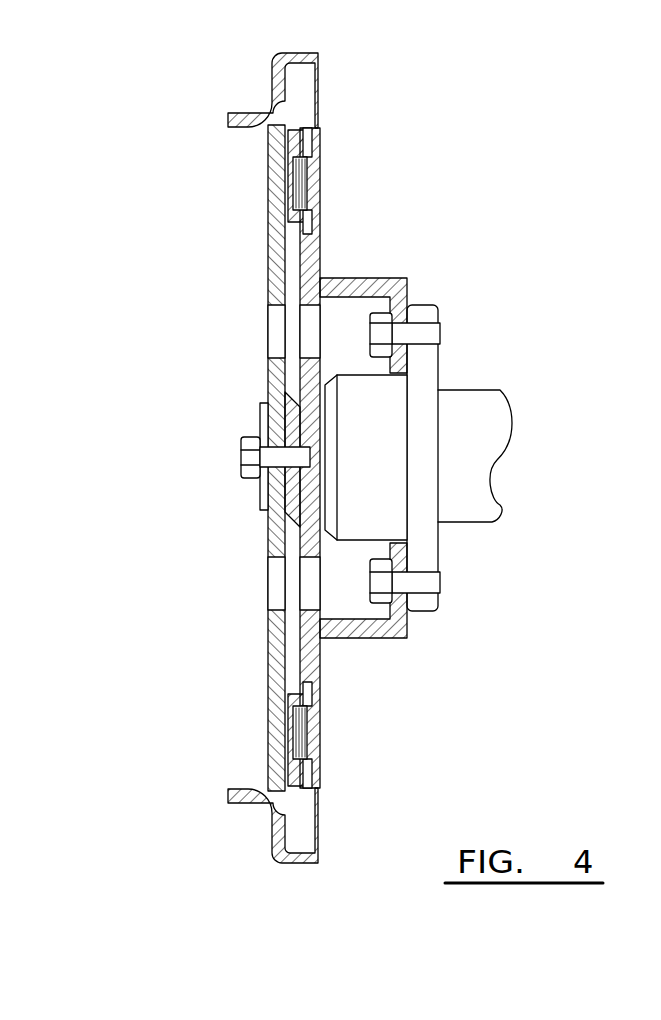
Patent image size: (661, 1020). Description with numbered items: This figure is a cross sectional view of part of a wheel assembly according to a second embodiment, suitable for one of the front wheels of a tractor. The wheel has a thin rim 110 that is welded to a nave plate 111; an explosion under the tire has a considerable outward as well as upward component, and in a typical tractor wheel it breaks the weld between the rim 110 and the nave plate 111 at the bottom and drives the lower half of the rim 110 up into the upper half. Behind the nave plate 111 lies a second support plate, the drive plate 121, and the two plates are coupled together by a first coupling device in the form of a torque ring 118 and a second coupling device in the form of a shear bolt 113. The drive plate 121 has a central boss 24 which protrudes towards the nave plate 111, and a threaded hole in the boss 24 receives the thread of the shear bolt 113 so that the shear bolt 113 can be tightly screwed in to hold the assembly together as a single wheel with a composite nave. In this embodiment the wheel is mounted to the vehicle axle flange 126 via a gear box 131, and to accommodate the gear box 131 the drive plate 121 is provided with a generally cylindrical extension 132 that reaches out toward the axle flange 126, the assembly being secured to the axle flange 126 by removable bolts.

The rim 110 is at (250, 789).
The nave plate 111 is at (268, 272).
The shear bolt 113 is at (241, 458).
The torque ring 118 is at (268, 142).
The drive plate 121 is at (320, 653).
The axle flange 126 is at (422, 546).
The gear box 131 is at (370, 405).
The generally cylindrical extension 132 is at (365, 278).
The central boss 24 is at (264, 403).